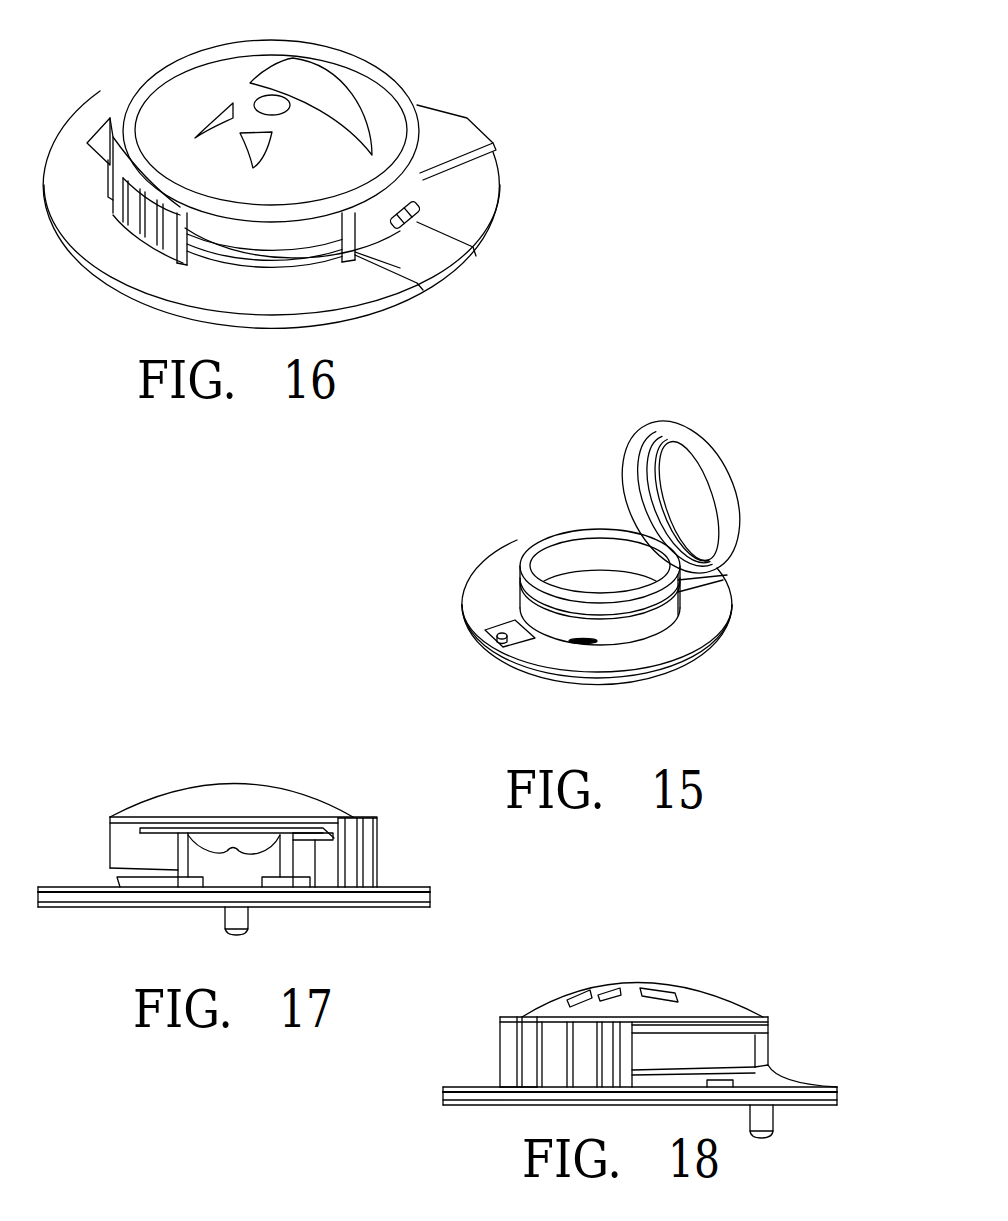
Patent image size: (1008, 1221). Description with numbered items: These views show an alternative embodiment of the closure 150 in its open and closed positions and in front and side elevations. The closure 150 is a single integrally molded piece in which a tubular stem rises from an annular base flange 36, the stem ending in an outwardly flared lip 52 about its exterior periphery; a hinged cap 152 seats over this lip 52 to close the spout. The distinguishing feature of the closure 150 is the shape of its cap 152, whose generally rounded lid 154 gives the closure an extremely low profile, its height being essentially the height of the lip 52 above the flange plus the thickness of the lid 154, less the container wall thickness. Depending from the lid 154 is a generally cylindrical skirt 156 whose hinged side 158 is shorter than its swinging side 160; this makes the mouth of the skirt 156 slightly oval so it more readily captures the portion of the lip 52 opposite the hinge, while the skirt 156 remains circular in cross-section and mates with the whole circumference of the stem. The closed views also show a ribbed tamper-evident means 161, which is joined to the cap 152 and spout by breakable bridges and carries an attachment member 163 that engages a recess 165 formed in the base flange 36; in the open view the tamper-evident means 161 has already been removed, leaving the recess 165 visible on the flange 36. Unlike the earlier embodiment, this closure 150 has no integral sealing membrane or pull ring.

In FIG. 16, the closure 150 is at (408, 45).
In FIG. 15, the closure 150 is at (660, 375).
In FIG. 17, the closure 150 is at (213, 760).
In FIG. 18, the closure 150 is at (672, 960).
In FIG. 15, the cap 152 is at (630, 425).
In FIG. 16, the lid 154 is at (377, 103).
In FIG. 17, the lid 154 is at (303, 795).
In FIG. 18, the lid 154 is at (733, 998).
In FIG. 16, the skirt 156 is at (271, 149).
In FIG. 15, the skirt 156 is at (732, 557).
In FIG. 16, the hinged side 158 is at (322, 238).
In FIG. 16, the tamper-evident means 161 is at (153, 238).
In FIG. 17, the tamper-evident means 161 is at (357, 907).
In FIG. 18, the tamper-evident means 161 is at (537, 1062).
In FIG. 15, the lip 52 is at (555, 532).
In FIG. 15, the base flange 36 is at (597, 612).
In FIG. 15, the recess 165 is at (507, 642).
In FIG. 17, the swinging side 160 is at (162, 857).
In FIG. 17, the attachment member 163 is at (247, 872).